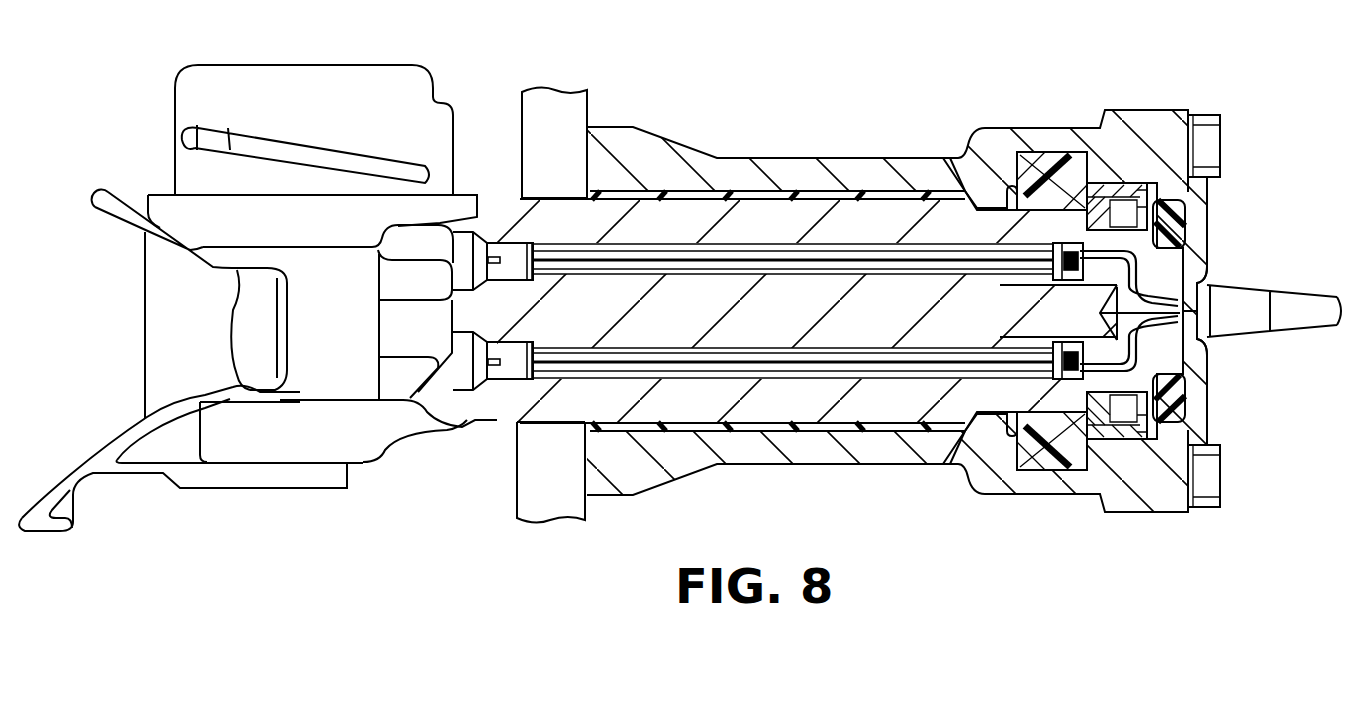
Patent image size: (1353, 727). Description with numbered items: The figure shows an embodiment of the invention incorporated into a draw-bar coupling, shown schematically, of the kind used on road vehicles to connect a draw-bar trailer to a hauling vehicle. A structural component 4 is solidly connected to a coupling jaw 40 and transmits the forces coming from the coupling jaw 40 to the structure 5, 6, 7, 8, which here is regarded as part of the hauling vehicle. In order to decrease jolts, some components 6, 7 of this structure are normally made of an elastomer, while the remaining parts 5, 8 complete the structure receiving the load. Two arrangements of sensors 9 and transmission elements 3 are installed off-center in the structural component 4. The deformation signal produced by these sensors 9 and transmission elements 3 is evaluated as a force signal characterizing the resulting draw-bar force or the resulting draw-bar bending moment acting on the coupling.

The transmission element 3 is at (737, 260).
The structural component 4 is at (848, 257).
The structure 5 is at (987, 150).
The structure component 6 is at (1047, 163).
The structure component 7 is at (1188, 210).
The structure 8 is at (1197, 253).
The sensor 9 is at (1070, 263).
The coupling jaw 40 is at (432, 203).